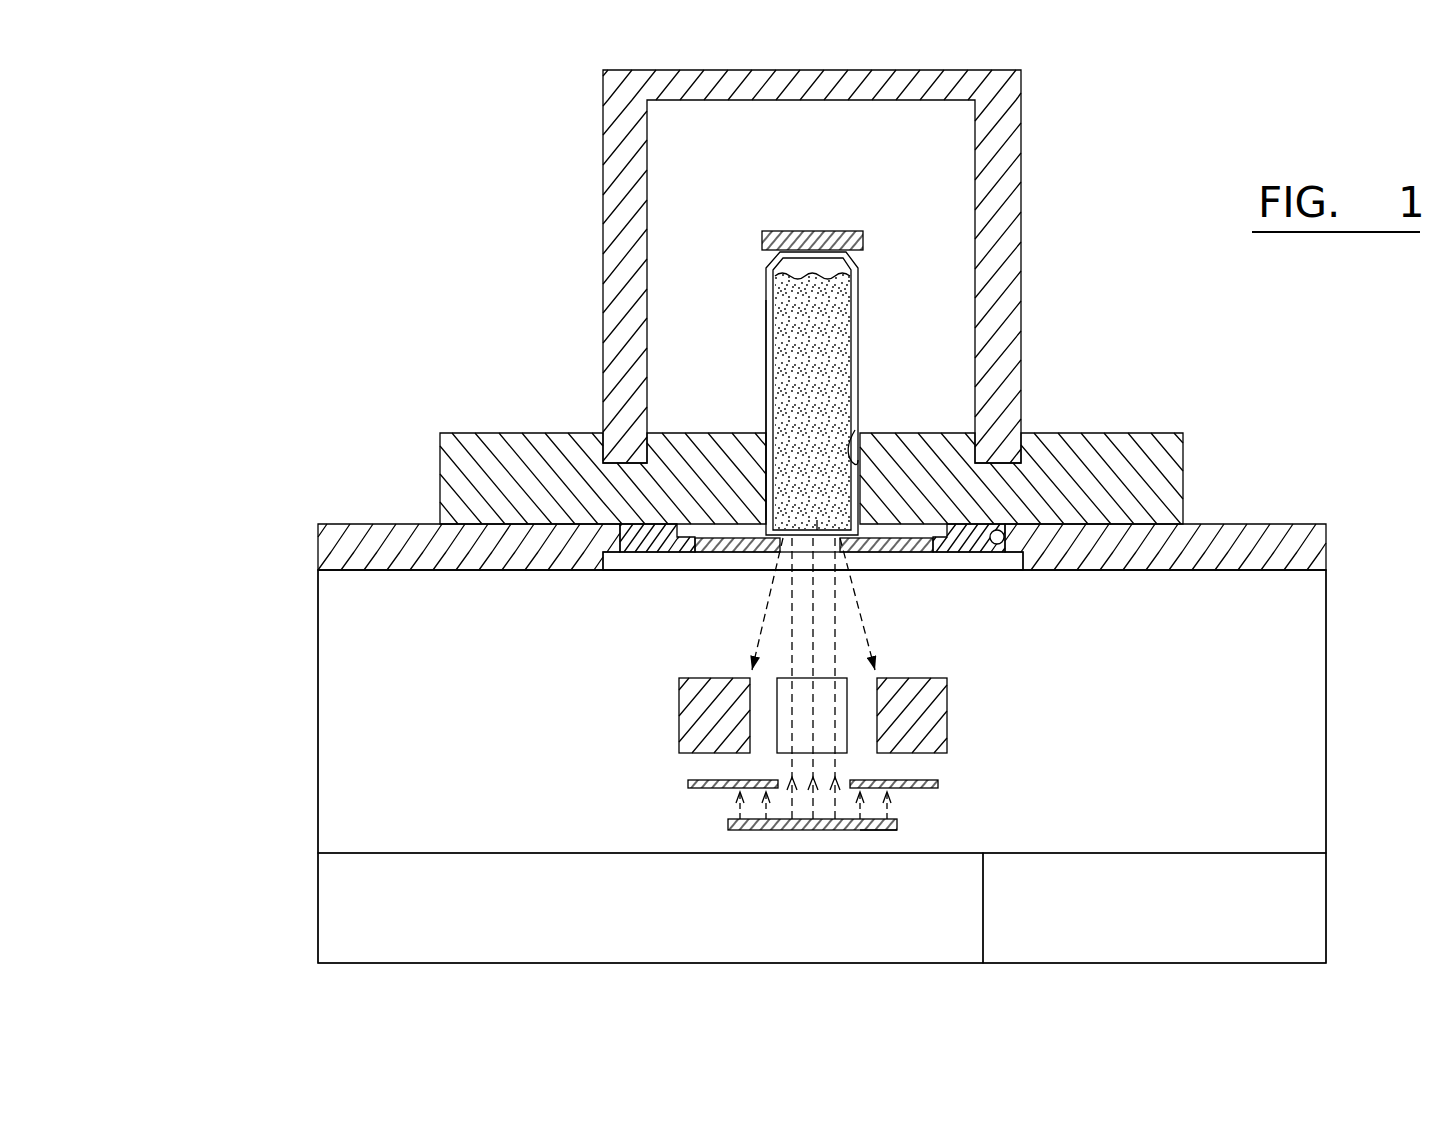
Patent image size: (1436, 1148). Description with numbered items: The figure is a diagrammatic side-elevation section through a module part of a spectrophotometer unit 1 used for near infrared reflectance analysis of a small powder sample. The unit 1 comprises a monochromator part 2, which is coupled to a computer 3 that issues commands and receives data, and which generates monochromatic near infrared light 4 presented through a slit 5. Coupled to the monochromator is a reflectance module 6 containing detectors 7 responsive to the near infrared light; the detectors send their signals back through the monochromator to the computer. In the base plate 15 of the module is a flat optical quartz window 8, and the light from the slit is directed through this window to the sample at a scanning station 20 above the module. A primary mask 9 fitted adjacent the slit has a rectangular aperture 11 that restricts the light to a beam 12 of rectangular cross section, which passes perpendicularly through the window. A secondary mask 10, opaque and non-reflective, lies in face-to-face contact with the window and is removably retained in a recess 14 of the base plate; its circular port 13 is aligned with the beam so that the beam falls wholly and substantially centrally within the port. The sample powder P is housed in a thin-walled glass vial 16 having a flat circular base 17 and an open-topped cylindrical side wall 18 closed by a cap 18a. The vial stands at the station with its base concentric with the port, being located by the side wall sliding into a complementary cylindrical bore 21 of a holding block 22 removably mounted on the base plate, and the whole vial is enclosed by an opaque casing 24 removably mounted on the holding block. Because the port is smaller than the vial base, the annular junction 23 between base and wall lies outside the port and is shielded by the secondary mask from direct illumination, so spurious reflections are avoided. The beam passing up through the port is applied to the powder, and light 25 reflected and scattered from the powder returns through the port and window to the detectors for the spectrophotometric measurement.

The spectrophotometer unit 1 is at (318, 718).
The monochromator part 2 is at (370, 909).
The computer 3 is at (1171, 920).
The near infrared light 4 is at (730, 800).
The slit 5 is at (878, 827).
The reflectance module 6 is at (318, 656).
The detectors 7 is at (700, 708).
The optical quartz window 8 is at (970, 553).
The primary mask 9 is at (940, 786).
The secondary mask 10 is at (640, 562).
The rectangular aperture 11 is at (843, 785).
The beam 12 is at (840, 647).
The circular port 13 is at (890, 562).
The recess 14 is at (1002, 542).
The base plate 15 is at (468, 572).
The glass vial 16 is at (766, 298).
The vial base 17 is at (817, 530).
The cylindrical side wall 18 is at (768, 408).
The cap 18a is at (762, 231).
The scanning station 20 is at (823, 162).
The cylindrical bore 21 is at (855, 430).
The holding block 22 is at (530, 433).
The wall/base junction 23 is at (735, 562).
The opaque casing 24 is at (602, 185).
The reflected light 25 is at (775, 605).
The sample powder P is at (836, 335).